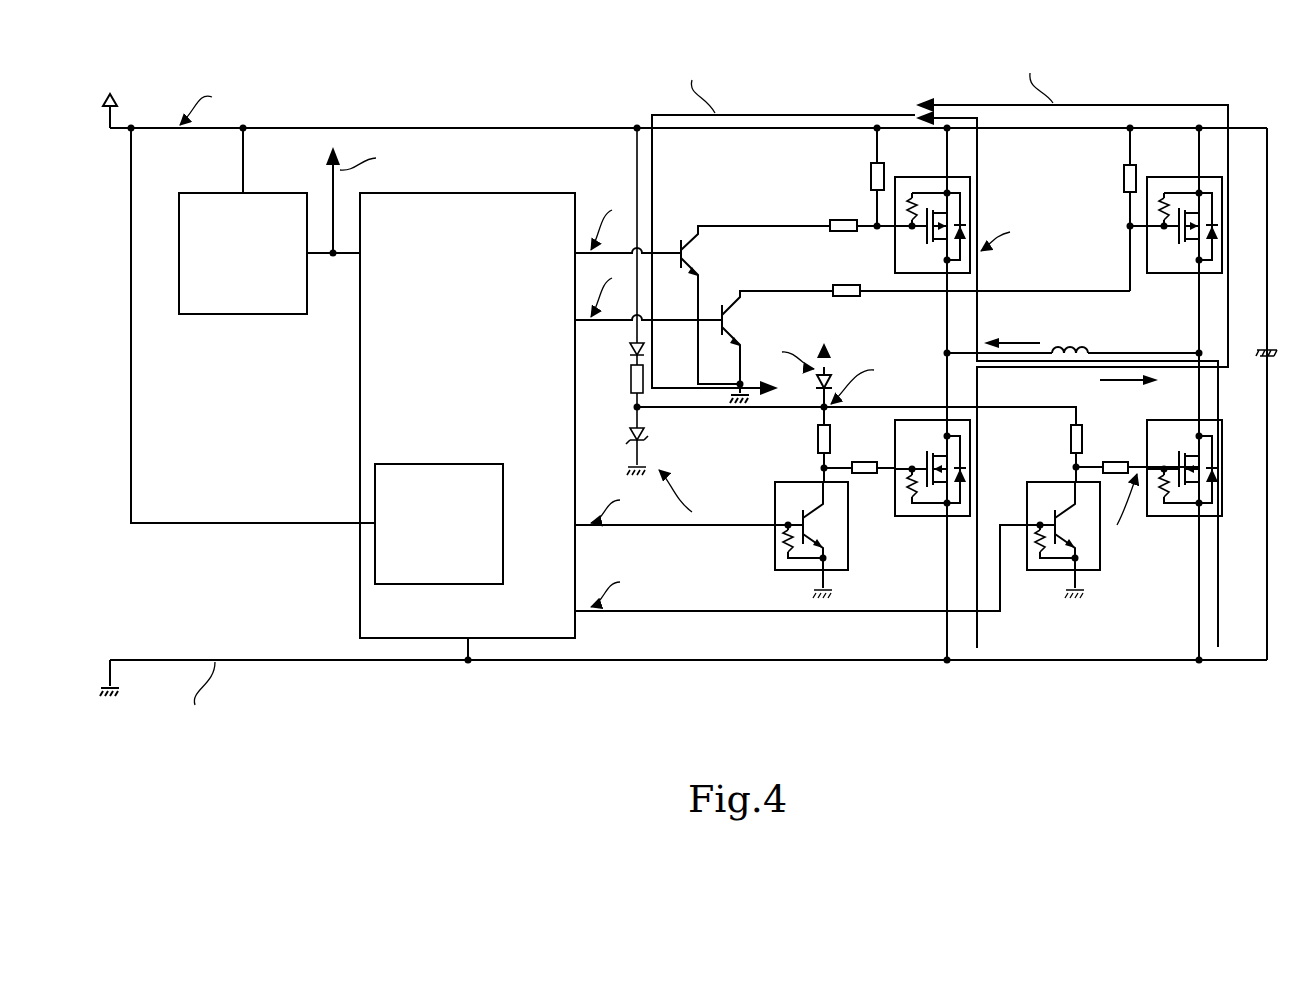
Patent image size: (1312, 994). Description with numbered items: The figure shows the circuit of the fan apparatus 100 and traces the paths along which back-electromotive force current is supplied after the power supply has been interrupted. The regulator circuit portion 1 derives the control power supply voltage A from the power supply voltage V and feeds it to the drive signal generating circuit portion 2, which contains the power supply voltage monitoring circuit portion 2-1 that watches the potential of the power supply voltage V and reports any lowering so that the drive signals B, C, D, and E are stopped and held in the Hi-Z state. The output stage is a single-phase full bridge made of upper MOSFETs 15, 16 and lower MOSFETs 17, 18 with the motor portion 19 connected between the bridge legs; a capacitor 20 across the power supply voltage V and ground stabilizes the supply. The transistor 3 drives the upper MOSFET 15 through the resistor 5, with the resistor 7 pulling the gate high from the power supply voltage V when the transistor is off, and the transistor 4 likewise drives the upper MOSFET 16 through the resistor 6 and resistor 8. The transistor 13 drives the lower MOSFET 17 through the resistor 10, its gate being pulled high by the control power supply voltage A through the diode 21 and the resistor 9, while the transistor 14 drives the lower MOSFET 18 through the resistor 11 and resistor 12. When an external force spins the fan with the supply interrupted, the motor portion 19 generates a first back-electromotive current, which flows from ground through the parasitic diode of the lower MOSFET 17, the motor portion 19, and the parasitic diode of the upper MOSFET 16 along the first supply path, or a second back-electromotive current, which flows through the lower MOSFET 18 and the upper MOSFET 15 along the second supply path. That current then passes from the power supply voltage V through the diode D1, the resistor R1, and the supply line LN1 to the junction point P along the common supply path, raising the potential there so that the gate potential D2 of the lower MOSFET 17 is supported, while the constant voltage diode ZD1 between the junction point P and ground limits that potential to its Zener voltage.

The fan apparatus 100 is at (1252, 57).
The regulator circuit portion 1 is at (243, 295).
The drive signal generating circuit portion 2 is at (513, 222).
The power supply voltage monitoring circuit portion 2-1 is at (433, 487).
The transistor 3 is at (683, 240).
The transistor 4 is at (736, 305).
The resistor 5 is at (830, 223).
The resistor 6 is at (833, 289).
The resistor 7 is at (871, 176).
The resistor 8 is at (1124, 176).
The resistor 9 is at (818, 440).
The resistor 10 is at (864, 475).
The resistor 11 is at (1071, 440).
The resistor 12 is at (1115, 462).
The transistor 13 is at (775, 545).
The transistor 14 is at (1100, 555).
The upper MOSFET 15 is at (971, 186).
The upper MOSFET 16 is at (1186, 273).
The lower MOSFET 17 is at (932, 517).
The lower MOSFET 18 is at (1212, 420).
The motor portion 19 is at (1077, 347).
The capacitor 20 is at (1268, 346).
The diode 21 is at (829, 375).
The diode D1 is at (623, 246).
The resistor R1 is at (623, 396).
The constant voltage diode ZD1 is at (660, 451).
The potential at the gate terminal of the lower MOSFET 17 D2 is at (887, 465).
The supply line LN1 is at (724, 411).